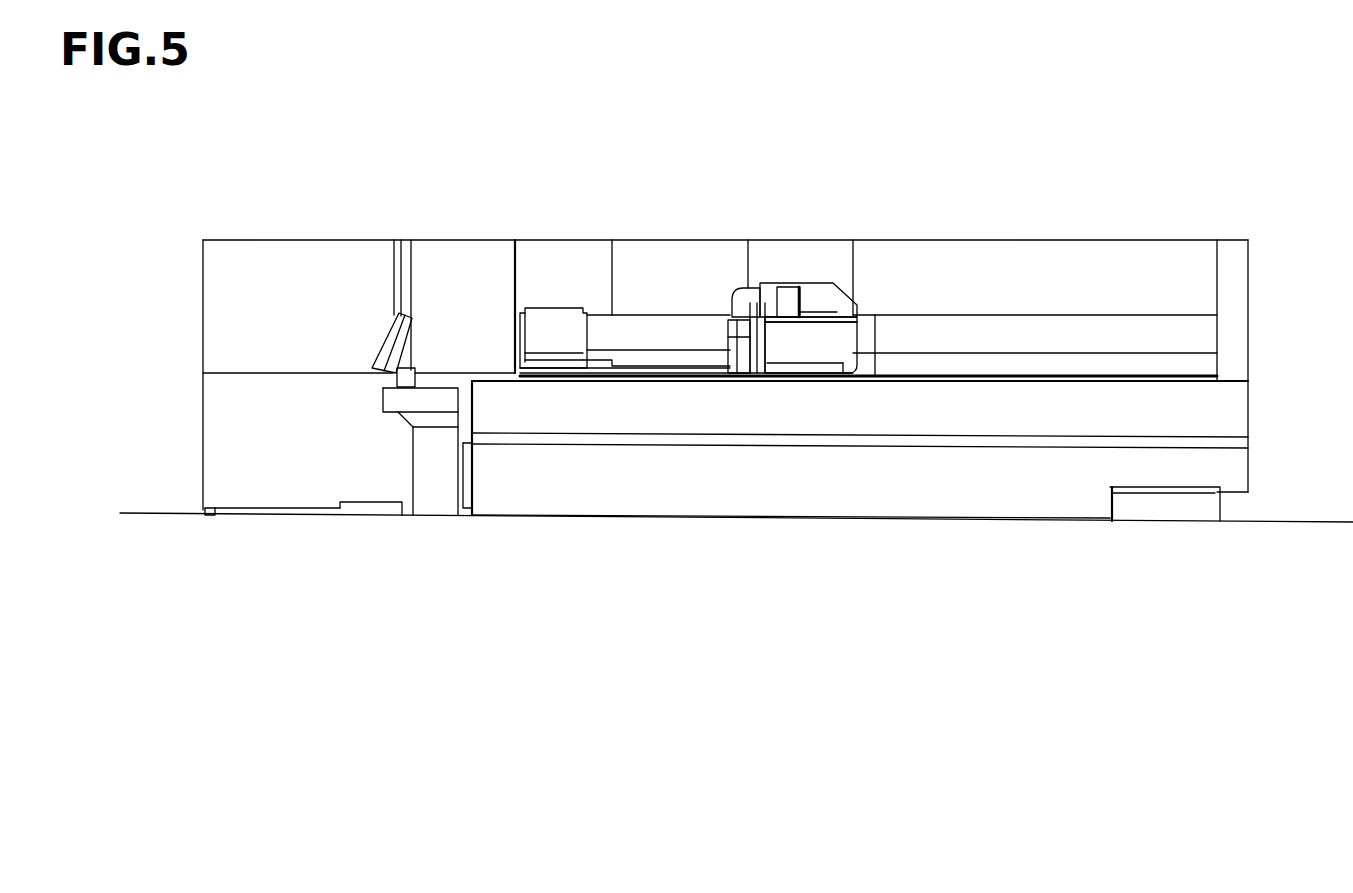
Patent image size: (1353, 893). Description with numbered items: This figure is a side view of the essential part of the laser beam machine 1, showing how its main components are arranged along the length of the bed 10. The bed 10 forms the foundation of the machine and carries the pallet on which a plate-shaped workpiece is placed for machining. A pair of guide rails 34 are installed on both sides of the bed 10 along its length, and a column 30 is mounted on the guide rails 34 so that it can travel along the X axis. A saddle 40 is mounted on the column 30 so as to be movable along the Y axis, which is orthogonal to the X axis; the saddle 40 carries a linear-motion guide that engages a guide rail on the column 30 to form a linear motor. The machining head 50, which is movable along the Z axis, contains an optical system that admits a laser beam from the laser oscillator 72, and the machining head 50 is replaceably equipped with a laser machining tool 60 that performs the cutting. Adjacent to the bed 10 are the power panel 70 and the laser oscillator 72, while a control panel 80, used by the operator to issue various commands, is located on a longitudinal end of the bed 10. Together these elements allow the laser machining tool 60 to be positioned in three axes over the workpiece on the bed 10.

The laser beam machine 1 is at (1043, 211).
The bed 10 is at (823, 484).
The column 30 is at (847, 337).
The guide rails 34 is at (957, 382).
The saddle 40 is at (813, 290).
The machining head 50 is at (737, 330).
The laser machining tool 60 is at (735, 378).
The power panel 70 is at (250, 252).
The laser oscillator 72 is at (770, 250).
The control panel 80 is at (391, 318).